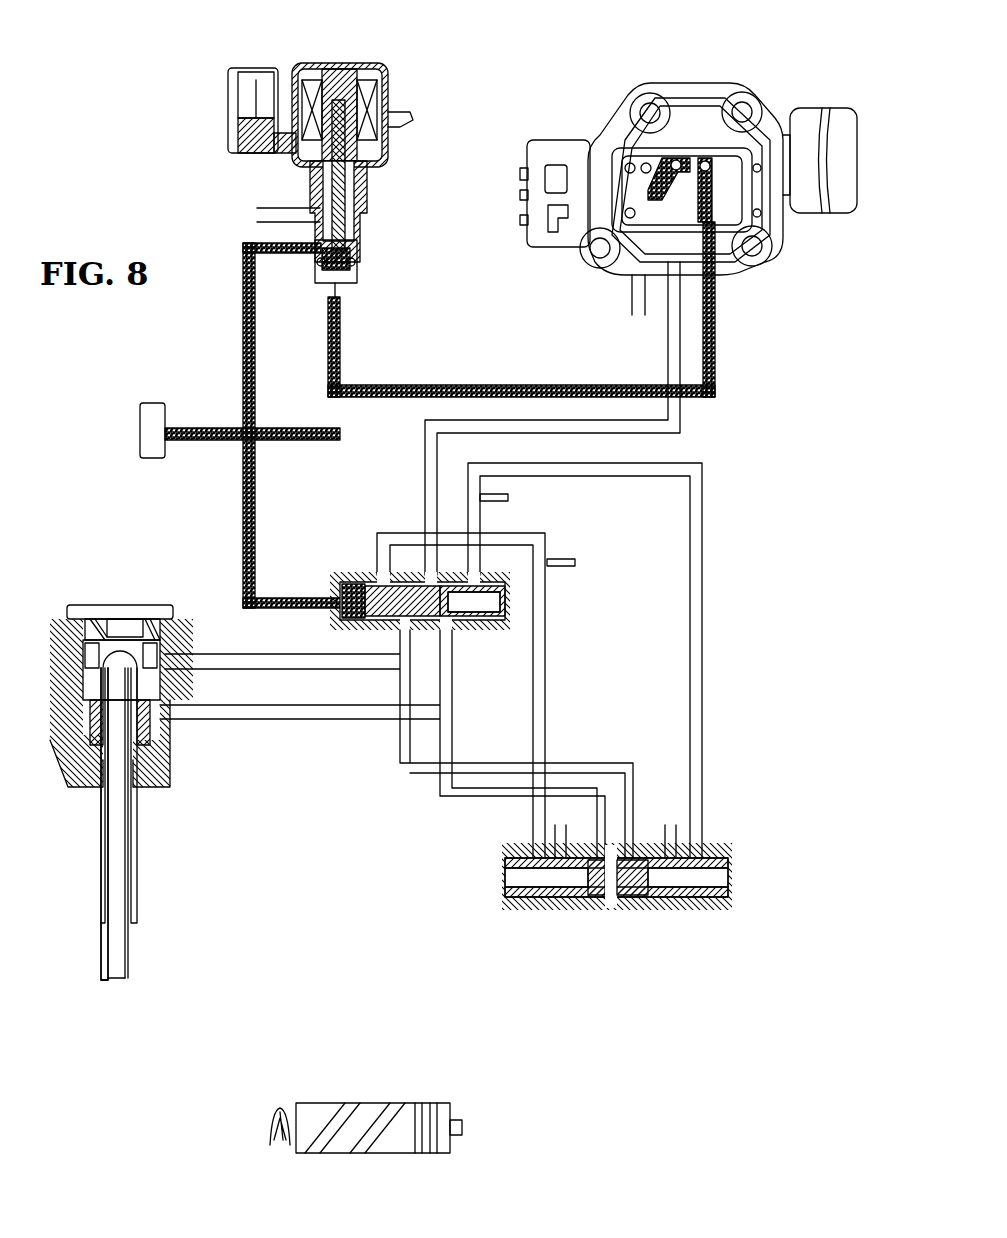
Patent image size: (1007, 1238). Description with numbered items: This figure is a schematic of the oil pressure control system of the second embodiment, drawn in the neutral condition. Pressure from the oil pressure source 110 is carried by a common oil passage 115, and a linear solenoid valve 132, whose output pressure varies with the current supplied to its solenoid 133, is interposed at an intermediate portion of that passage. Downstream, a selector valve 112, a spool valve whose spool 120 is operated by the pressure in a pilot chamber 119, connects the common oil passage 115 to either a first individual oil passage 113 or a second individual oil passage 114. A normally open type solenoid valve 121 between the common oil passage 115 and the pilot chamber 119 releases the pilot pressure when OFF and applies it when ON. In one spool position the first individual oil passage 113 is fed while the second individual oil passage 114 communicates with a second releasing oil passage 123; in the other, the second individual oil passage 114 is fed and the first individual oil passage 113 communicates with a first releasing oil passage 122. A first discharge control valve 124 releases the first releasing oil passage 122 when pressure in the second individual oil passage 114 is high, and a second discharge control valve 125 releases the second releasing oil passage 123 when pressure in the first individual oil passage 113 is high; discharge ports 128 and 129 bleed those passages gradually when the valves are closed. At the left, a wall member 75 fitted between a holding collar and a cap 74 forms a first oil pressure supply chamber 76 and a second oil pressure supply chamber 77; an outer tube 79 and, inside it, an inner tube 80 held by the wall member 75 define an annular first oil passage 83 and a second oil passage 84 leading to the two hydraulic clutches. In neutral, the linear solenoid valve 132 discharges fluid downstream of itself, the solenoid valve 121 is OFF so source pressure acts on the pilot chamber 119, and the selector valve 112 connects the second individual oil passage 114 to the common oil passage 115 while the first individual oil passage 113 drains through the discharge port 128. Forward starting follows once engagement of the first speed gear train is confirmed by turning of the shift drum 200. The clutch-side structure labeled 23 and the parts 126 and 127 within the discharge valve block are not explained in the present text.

The fuel injector assembly 23 is at (70, 611).
The cap 74 is at (150, 606).
The wall member 75 is at (80, 742).
The first oil pressure supply chamber 76 is at (153, 760).
The second oil pressure supply chamber 77 is at (150, 650).
The outer tube 79 is at (100, 878).
The inner tube 80 is at (101, 955).
The first oil passage 83 is at (133, 928).
The second oil passage 84 is at (117, 982).
The oil pressure source 110 is at (152, 460).
The selector valve 112 is at (330, 591).
The first individual oil passage 113 is at (248, 710).
The second individual oil passage 114 is at (238, 655).
The common oil passage 115 is at (448, 383).
The pilot chamber 119 is at (349, 582).
The spool 120 is at (498, 632).
The normally open type solenoid valve 121 is at (395, 62).
The first releasing oil passage 122 is at (596, 468).
The second releasing oil passage 123 is at (548, 696).
The first discharge control valve 124 is at (688, 914).
The second discharge control valve 125 is at (556, 911).
The partition 126 is at (628, 908).
The piston 127 is at (601, 915).
The discharge port 128 is at (508, 497).
The discharge port 129 is at (574, 562).
The linear solenoid valve 132 is at (732, 74).
The solenoid 133 is at (808, 123).
The shift drum 200 is at (380, 1158).